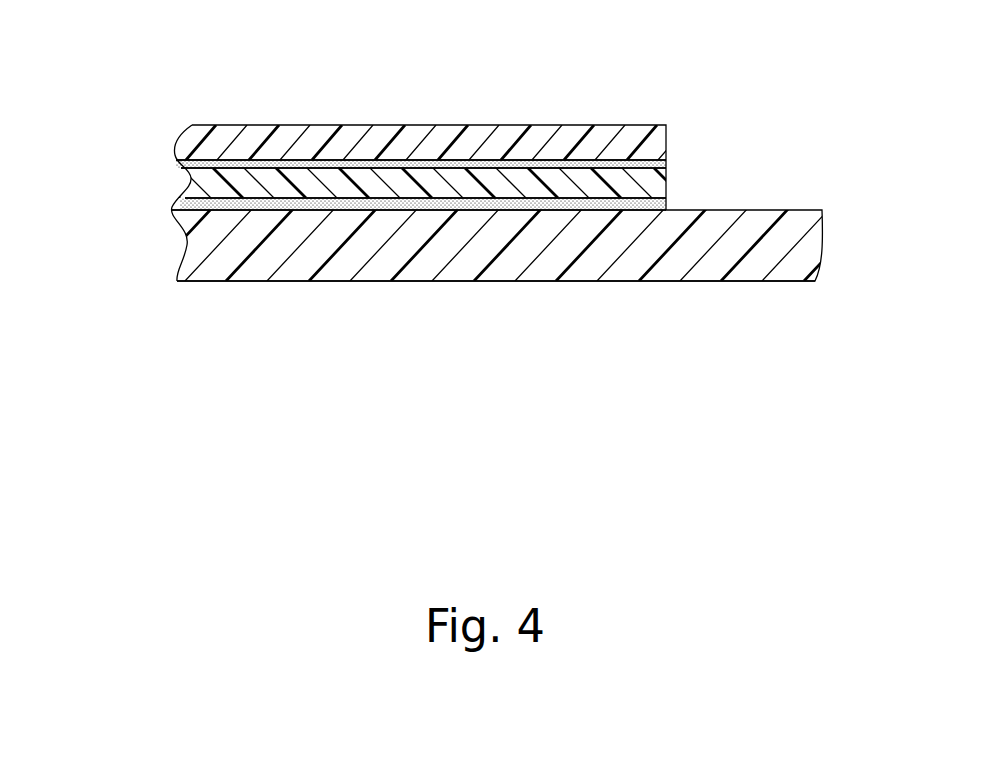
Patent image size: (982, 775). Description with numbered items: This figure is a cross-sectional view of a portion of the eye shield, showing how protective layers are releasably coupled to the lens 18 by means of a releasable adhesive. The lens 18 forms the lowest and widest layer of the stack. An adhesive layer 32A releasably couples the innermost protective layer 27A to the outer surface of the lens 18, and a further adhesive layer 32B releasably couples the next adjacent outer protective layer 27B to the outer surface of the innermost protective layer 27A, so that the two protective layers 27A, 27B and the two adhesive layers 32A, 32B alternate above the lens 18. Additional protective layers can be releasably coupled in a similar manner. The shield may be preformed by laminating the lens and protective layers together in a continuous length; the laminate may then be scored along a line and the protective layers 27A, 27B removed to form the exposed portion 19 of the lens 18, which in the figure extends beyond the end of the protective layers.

The lens 18 is at (584, 284).
The portion of the lens 19 is at (789, 228).
The innermost protective layer 27A is at (652, 183).
The next adjacent outer protective layer 27B is at (598, 143).
The adhesive layer 32A is at (173, 207).
The adhesive layer 32B is at (178, 162).